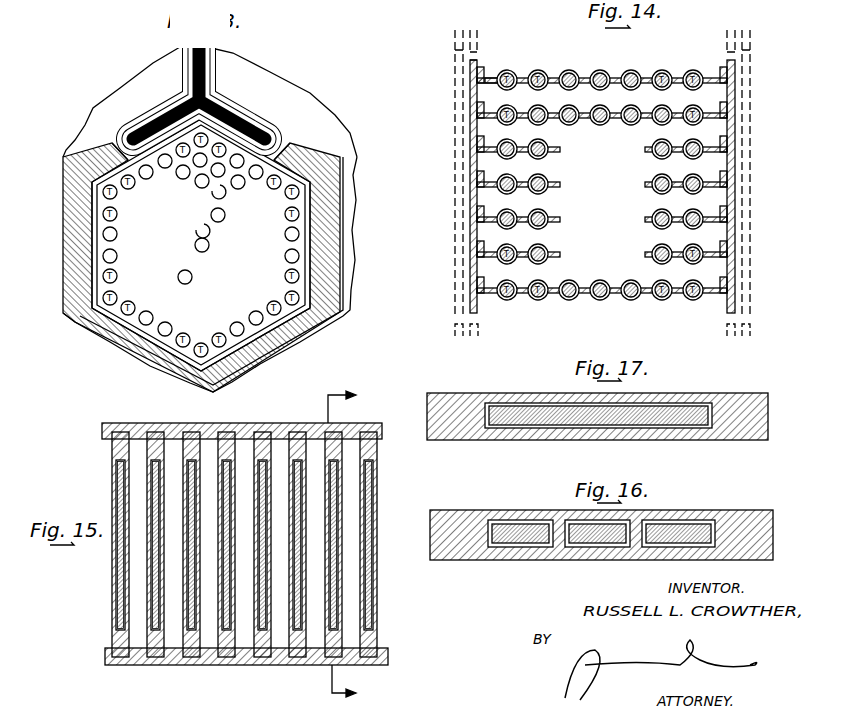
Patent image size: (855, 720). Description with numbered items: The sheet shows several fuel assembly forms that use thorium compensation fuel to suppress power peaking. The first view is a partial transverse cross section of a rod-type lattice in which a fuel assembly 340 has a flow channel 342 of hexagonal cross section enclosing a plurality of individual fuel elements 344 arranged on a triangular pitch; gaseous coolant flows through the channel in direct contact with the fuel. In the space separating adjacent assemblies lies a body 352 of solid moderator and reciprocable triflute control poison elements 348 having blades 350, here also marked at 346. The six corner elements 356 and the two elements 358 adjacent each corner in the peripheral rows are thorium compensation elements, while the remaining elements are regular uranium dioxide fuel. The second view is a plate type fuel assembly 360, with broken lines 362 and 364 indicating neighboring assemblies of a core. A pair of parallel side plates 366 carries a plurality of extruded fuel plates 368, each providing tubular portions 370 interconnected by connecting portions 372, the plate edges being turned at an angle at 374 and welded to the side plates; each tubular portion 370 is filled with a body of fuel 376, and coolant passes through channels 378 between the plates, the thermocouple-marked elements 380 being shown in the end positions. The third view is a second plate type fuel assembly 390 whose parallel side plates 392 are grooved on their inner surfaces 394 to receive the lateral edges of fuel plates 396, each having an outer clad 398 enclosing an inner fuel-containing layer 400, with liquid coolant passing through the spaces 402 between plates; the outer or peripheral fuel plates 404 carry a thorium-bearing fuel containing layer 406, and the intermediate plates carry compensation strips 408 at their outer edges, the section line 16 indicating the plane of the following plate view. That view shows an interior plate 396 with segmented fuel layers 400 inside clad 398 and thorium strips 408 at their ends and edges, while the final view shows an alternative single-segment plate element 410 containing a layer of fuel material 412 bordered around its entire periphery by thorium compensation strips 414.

In FIG. 13, the fuel assembly 340 is at (165, 83).
In FIG. 13, the flow channel 342 is at (190, 255).
In FIG. 13, the fuel elements 344 is at (103, 257).
In FIG. 13, the channel end 346 is at (123, 138).
In FIG. 13, the control poison elements 348 is at (280, 130).
In FIG. 13, the blades 350 is at (215, 85).
In FIG. 13, the body of solid moderator 352 is at (73, 275).
In FIG. 13, the corner elements 356 is at (170, 247).
In FIG. 13, the compensation elements 358 is at (117, 215).
In FIG. 14, the plate type fuel assembly 360 is at (738, 136).
In FIG. 14, the broken lines 362 is at (753, 255).
In FIG. 14, the broken lines 364 is at (457, 275).
In FIG. 14, the side plates 366 is at (604, 166).
In FIG. 14, the fuel plates 368 is at (572, 182).
In FIG. 14, the tubular portions 370 is at (573, 70).
In FIG. 14, the connecting portions 372 is at (522, 75).
In FIG. 14, the turned edges 374 is at (478, 62).
In FIG. 14, the body of fuel 376 is at (600, 167).
In FIG. 14, the channels 378 is at (493, 97).
In FIG. 14, the thermocouple element 380 is at (703, 110).
In FIG. 15, the fuel assembly 390 is at (239, 545).
In FIG. 15, the side plates 392 is at (102, 432).
In FIG. 15, the inner surfaces 394 is at (137, 447).
In FIG. 15, the fuel plates 396 is at (235, 545).
In FIG. 16, the fuel plates 396 is at (612, 544).
In FIG. 15, the clad 398 is at (235, 546).
In FIG. 16, the clad 398 is at (748, 520).
In FIG. 15, the fuel-containing layer 400 is at (152, 590).
In FIG. 16, the fuel-containing layer 400 is at (520, 535).
In FIG. 15, the spaces 402 is at (172, 633).
In FIG. 15, the outer fuel plates 404 is at (235, 546).
In FIG. 15, the fuel containing layer 406 is at (235, 544).
In FIG. 15, the strip 408 is at (235, 546).
In FIG. 16, the strip 408 is at (608, 545).
In FIG. 17, the plate element 410 is at (601, 429).
In FIG. 17, the layer of fuel material 412 is at (510, 420).
In FIG. 17, the thorium compensation strips 414 is at (664, 426).
In FIG. 15, the section line 16 is at (333, 544).